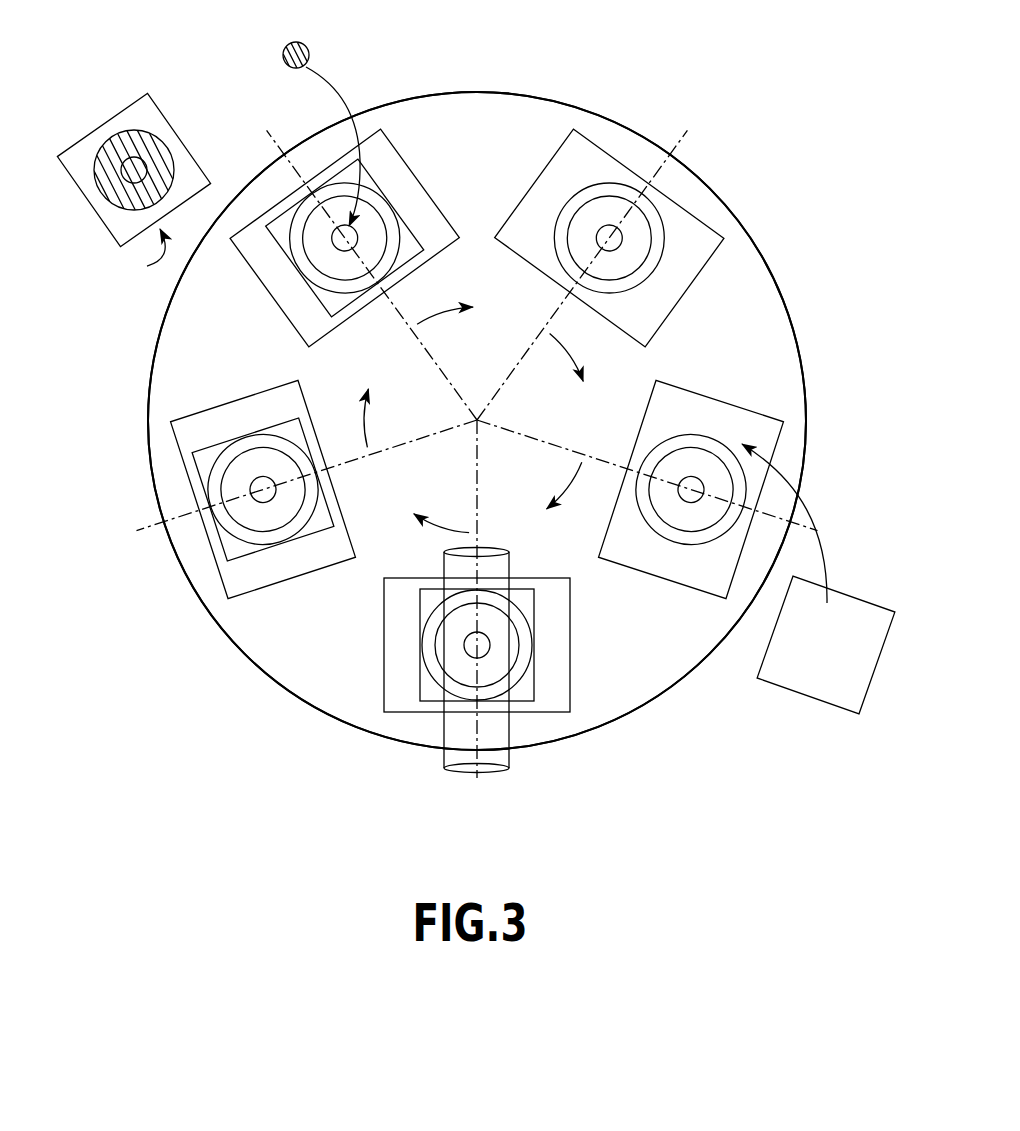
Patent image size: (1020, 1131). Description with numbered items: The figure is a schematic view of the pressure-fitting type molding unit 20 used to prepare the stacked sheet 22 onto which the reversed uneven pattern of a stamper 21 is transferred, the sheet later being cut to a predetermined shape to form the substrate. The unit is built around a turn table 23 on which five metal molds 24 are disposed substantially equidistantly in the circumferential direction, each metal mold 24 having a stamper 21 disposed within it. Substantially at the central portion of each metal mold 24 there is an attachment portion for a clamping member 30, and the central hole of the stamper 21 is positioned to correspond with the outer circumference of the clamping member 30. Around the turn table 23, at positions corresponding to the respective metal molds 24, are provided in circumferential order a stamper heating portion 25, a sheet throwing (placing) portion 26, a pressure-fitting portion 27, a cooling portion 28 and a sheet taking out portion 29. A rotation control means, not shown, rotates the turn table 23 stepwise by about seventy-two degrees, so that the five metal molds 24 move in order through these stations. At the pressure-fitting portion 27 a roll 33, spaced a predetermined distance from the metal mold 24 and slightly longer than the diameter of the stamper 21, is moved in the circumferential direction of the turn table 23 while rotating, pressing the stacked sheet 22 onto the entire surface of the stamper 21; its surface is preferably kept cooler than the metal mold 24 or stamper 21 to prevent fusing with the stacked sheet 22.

The pressure-fitting type molding unit 20 is at (761, 127).
The stamper 21 is at (420, 677).
The stacked sheet 22 is at (73, 155).
The turn table 23 is at (240, 622).
The metal mold 24 is at (665, 232).
The stamper heating portion 25 is at (652, 213).
The sheet throwing (placing) portion 26 is at (787, 462).
The pressure-fitting portion 27 is at (525, 690).
The cooling portion 28 is at (235, 489).
The sheet taking out portion 29 is at (138, 260).
The clamping member 30 is at (310, 53).
The roll 33 is at (440, 757).